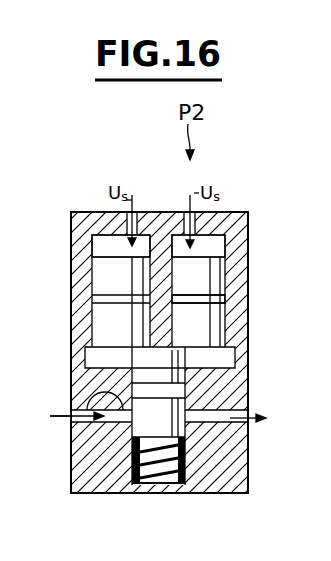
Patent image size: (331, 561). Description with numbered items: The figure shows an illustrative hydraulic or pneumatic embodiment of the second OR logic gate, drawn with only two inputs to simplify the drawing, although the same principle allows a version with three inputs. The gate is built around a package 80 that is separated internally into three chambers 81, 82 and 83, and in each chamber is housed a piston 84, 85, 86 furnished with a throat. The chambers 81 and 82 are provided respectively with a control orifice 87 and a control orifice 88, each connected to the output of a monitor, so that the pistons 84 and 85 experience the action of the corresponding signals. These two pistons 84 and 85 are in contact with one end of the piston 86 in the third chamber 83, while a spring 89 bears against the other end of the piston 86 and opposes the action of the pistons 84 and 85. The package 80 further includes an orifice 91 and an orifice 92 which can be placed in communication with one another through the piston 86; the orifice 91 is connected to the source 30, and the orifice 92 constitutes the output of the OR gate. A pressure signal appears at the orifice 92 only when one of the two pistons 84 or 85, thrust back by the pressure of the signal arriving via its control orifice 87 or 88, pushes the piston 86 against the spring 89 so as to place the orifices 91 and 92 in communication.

The source 30 is at (60, 416).
The package 80 is at (243, 280).
The chamber 81 is at (100, 241).
The chamber 82 is at (232, 240).
The chamber 83 is at (170, 479).
The piston 84 is at (97, 331).
The piston 85 is at (203, 330).
The piston 86 is at (165, 365).
The control orifice 87 is at (141, 246).
The control orifice 88 is at (216, 247).
The spring 89 is at (152, 480).
The orifice 91 is at (86, 398).
The orifice 92 is at (205, 411).